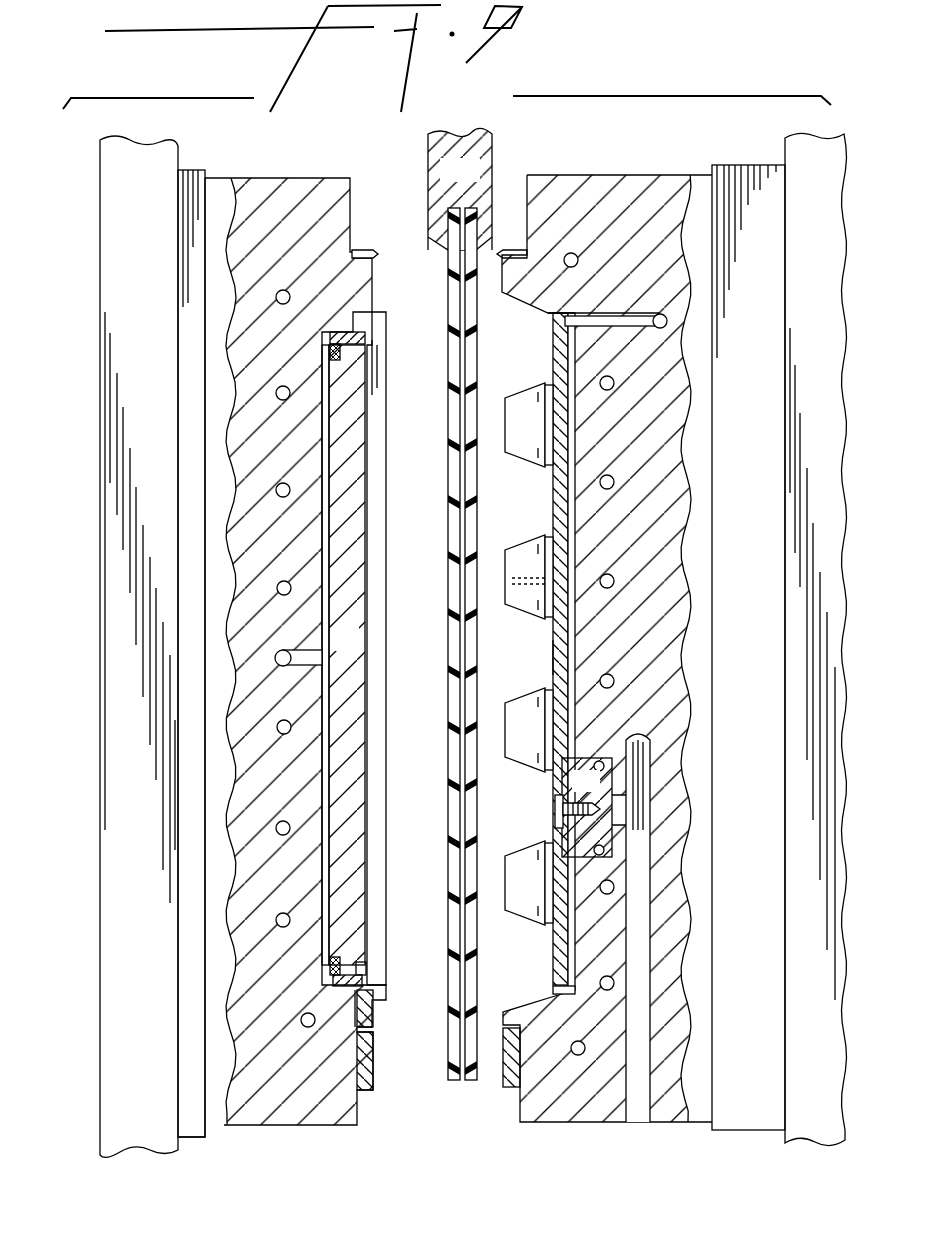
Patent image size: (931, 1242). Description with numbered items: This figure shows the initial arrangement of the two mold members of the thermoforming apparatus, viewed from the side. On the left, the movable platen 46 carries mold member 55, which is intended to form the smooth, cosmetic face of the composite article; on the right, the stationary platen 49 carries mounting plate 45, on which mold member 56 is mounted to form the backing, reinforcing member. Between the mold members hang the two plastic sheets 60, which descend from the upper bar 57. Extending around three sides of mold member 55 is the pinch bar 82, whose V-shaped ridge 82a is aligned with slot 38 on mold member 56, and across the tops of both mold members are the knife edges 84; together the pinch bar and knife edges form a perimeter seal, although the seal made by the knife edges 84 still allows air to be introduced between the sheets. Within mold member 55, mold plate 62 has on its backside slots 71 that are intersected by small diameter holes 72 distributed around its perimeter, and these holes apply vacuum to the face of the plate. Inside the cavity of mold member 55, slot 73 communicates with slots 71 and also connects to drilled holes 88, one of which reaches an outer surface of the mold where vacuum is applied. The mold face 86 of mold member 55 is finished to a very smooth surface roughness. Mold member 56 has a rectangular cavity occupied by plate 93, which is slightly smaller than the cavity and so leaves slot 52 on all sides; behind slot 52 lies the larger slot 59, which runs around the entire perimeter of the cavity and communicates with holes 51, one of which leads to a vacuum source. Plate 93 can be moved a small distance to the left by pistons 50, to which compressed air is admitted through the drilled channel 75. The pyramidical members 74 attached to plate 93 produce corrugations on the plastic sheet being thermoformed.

The movable platen 46 is at (106, 242).
The stationary platen 49 is at (785, 140).
The mounting plate 45 is at (745, 645).
The upper bar 57 is at (447, 182).
The knife edges 84 is at (372, 250).
The holes 51 is at (655, 313).
The slots 71 is at (330, 338).
The plastic sheets 60 is at (450, 352).
The pyramidical members 74 is at (510, 437).
The drilled holes 88 is at (300, 648).
The mold plate 62 is at (334, 650).
The mold face 86 is at (387, 660).
The plate 93 is at (553, 657).
The pistons 50 is at (574, 792).
The drilled channel 75 is at (652, 812).
The slot 73 is at (324, 878).
The small diameter holes 72 is at (366, 962).
The larger slot 59 is at (569, 968).
The slot 52 is at (556, 990).
The V-shaped ridge 82a is at (374, 1036).
The pinch bar 82 is at (374, 1090).
The slot 38 is at (503, 1030).
The mold member 55 is at (318, 1127).
The mold member 56 is at (565, 1125).